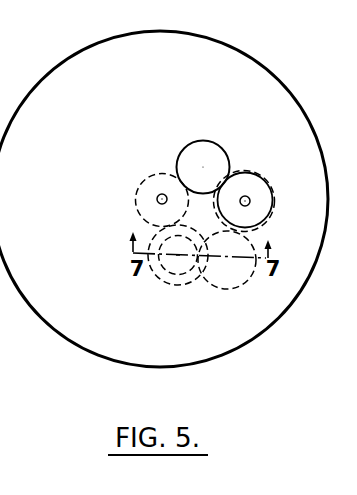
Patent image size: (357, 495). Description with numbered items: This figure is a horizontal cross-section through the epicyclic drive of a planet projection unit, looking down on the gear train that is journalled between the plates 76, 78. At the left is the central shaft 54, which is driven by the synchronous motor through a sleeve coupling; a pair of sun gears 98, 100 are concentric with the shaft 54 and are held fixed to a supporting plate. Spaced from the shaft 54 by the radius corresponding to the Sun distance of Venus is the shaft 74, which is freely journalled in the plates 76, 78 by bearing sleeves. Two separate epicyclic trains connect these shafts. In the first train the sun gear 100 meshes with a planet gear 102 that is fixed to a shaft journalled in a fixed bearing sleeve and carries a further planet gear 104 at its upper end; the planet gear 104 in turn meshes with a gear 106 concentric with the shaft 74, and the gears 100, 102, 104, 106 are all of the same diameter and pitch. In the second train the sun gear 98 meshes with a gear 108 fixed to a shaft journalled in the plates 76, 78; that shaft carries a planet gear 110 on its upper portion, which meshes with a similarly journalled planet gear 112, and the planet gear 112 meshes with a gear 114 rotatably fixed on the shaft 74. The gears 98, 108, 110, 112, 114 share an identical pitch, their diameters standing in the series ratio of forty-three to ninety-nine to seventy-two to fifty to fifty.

The shaft 54 is at (157, 200).
The shaft 74 is at (250, 201).
The plate 76 is at (164, 204).
The plate 78 is at (62, 332).
The sun gear 98 is at (134, 186).
The sun gear 100 is at (139, 184).
The planet gear 102 is at (208, 147).
The planet gear 104 is at (200, 140).
The gear 106 is at (258, 173).
The gear 108 is at (165, 285).
The planet gear 110 is at (187, 283).
The planet gear 112 is at (243, 287).
The gear 114 is at (272, 224).